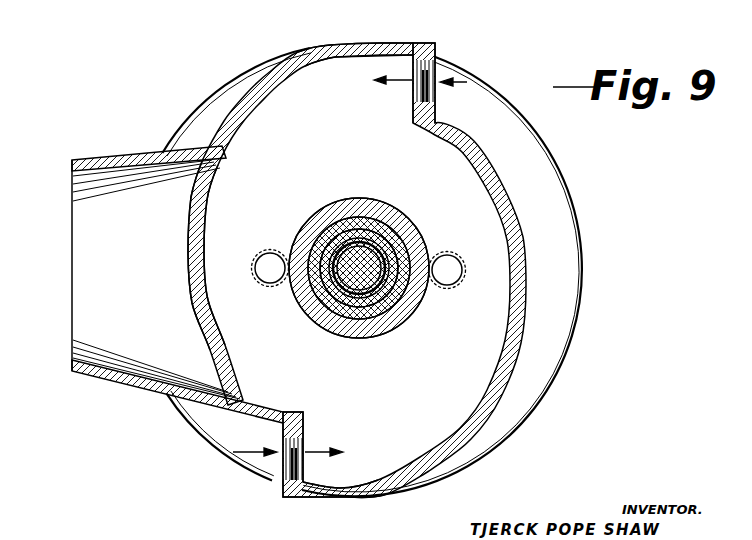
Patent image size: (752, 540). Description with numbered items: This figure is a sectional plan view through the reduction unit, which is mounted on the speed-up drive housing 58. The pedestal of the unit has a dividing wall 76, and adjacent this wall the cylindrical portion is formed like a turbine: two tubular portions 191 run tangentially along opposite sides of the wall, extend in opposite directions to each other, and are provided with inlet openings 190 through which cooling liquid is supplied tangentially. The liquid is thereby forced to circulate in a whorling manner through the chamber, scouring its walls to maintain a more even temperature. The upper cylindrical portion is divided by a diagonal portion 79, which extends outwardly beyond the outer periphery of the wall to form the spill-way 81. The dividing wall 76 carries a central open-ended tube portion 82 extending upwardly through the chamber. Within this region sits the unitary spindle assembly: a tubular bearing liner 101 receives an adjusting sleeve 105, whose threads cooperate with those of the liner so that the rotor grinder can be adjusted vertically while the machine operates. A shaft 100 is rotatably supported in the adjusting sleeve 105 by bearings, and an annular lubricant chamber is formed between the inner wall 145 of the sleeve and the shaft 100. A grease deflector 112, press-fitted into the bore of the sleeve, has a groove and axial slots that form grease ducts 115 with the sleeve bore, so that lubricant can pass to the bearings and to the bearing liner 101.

The speed-up drive housing 58 is at (580, 300).
The dividing wall 76 is at (437, 420).
The diagonal portion 79 is at (210, 288).
The spill-way 81 is at (82, 335).
The central open-ended tube portion 82 is at (345, 199).
The shaft 100 is at (370, 245).
The tubular bearing liner 101 is at (312, 298).
The adjusting sleeve 105 is at (376, 282).
The grease deflector 112 is at (318, 248).
The grease ducts 115 is at (363, 338).
The inner wall of the adjusting sleeve 145 is at (420, 248).
The inlet openings 190 is at (450, 63).
The tubular portions 191 is at (387, 43).